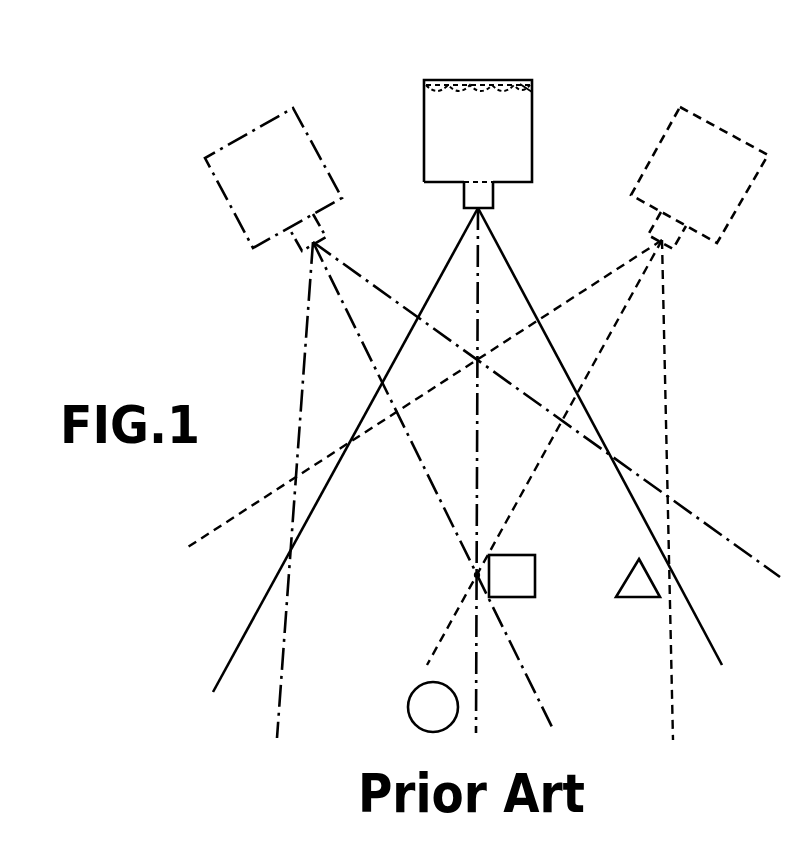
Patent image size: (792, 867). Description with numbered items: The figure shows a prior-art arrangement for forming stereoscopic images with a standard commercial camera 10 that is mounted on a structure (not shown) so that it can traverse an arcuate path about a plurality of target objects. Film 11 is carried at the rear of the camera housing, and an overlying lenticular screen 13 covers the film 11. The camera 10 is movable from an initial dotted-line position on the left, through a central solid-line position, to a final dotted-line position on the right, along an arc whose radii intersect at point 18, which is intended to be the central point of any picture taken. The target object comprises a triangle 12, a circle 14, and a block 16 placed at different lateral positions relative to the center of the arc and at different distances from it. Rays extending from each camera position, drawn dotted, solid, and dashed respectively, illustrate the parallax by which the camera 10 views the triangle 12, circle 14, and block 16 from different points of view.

The camera 10 is at (467, 80).
The film 11 is at (487, 121).
The lenticular screen 13 is at (533, 88).
The triangle 12 is at (639, 597).
The circle 14 is at (409, 707).
The block 16 is at (530, 576).
The point 18 is at (473, 575).